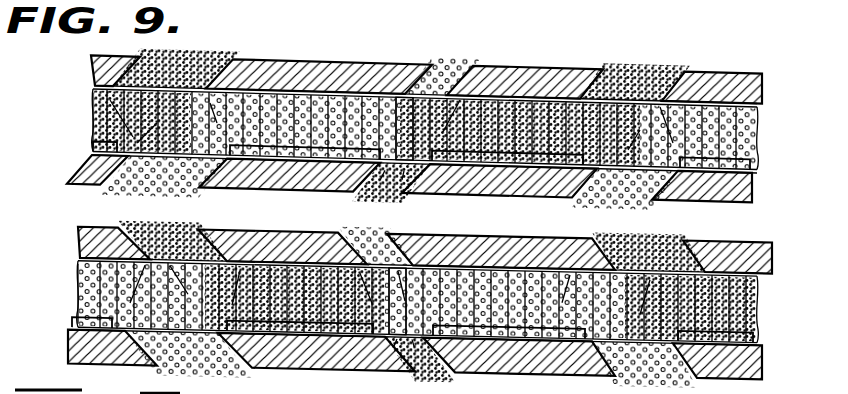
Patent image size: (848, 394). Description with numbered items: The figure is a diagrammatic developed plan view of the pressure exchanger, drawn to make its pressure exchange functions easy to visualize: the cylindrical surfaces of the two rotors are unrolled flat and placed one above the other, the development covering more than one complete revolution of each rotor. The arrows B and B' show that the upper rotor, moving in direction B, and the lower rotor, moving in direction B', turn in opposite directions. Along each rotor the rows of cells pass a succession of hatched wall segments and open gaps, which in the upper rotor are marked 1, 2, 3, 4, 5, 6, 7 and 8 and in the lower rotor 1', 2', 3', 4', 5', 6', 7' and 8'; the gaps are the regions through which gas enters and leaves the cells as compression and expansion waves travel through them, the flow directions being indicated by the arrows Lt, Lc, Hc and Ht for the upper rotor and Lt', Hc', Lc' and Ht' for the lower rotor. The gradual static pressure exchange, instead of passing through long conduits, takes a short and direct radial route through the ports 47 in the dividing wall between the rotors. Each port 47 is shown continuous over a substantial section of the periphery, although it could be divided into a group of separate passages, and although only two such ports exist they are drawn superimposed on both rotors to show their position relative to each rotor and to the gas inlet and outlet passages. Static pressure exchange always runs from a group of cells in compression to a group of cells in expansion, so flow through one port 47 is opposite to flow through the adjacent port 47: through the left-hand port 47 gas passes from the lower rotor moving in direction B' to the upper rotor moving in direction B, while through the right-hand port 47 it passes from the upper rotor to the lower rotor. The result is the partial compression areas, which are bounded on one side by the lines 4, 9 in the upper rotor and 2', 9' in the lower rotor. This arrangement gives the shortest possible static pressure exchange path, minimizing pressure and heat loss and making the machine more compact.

The first covering strip 1 is at (115, 71).
The second covering strip 2 is at (335, 176).
The third covering strip 3 is at (479, 82).
The partial compression area boundary line 4 is at (472, 180).
The fifth covering strip 5 is at (497, 97).
The sixth covering strip 6 is at (382, 177).
The seventh covering strip 7 is at (450, 105).
The eighth covering strip 8 is at (403, 177).
The partial compression area boundary line 9 is at (406, 128).
The port 47 is at (333, 144).
The first covering strip (second band) 1' is at (121, 243).
The partial compression area boundary line 2' is at (341, 351).
The third covering strip (second band) 3' is at (485, 253).
The fourth covering strip (second band) 4' is at (483, 354).
The fifth covering strip (second band) 5' is at (489, 268).
The sixth covering strip (second band) 6' is at (397, 342).
The seventh covering strip (second band) 7' is at (395, 275).
The eighth covering strip (second band) 8' is at (416, 343).
The partial compression area boundary line 9' is at (403, 301).
The rotation direction arrow B is at (75, 115).
The rotation direction arrow B' is at (63, 284).
The light transmission direction Lt is at (423, 60).
The light direction Lc is at (384, 199).
The heat direction Hc is at (471, 55).
The heat transmission direction Ht is at (376, 200).
The light transmission direction (second band) Lt' is at (409, 231).
The heat direction (second band) Hc' is at (359, 228).
The light direction (second band) Lc' is at (431, 374).
The heat transmission direction (second band) Ht' is at (437, 379).